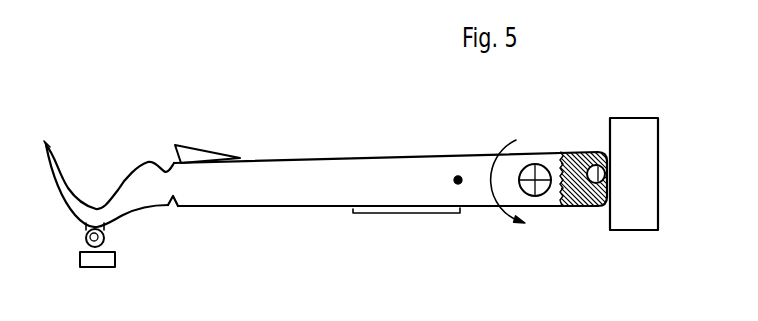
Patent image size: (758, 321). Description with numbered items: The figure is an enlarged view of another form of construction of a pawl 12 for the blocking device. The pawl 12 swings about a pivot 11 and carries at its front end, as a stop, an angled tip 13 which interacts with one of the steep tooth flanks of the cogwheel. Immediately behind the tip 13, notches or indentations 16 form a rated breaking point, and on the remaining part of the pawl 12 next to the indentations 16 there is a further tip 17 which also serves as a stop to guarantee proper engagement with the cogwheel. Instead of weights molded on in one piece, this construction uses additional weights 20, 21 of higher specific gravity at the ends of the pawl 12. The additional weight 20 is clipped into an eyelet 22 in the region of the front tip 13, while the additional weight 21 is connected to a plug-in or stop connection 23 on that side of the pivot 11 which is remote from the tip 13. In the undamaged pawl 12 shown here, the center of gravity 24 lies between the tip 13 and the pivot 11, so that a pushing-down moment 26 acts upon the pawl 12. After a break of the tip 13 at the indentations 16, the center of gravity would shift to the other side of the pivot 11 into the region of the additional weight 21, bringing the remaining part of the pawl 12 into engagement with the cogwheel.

The pivot 11 is at (538, 172).
The pawl 12 is at (253, 187).
The angled tip 13 is at (47, 144).
The notches or indentations 16 is at (165, 163).
The further tip 17 is at (190, 151).
The additional weight 20 is at (97, 258).
The additional weight 21 is at (647, 200).
The eyelet 22 is at (84, 240).
The plug-in or stop connection 23 is at (594, 156).
The center of gravity 24 is at (455, 186).
The pushing-down moment 26 is at (488, 191).